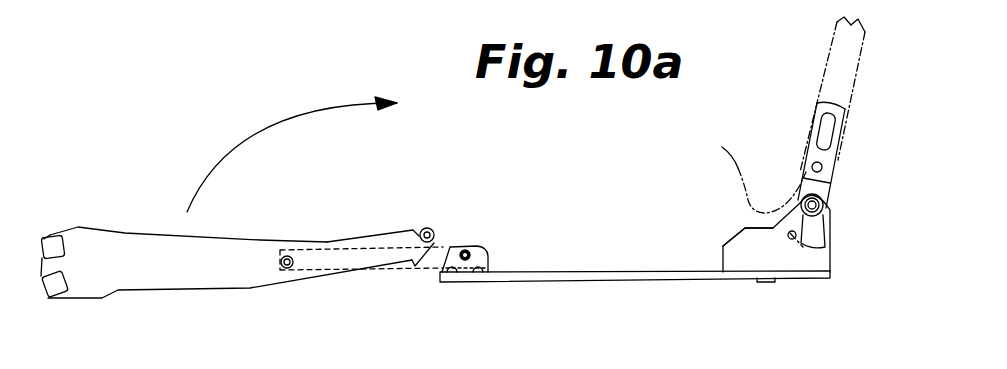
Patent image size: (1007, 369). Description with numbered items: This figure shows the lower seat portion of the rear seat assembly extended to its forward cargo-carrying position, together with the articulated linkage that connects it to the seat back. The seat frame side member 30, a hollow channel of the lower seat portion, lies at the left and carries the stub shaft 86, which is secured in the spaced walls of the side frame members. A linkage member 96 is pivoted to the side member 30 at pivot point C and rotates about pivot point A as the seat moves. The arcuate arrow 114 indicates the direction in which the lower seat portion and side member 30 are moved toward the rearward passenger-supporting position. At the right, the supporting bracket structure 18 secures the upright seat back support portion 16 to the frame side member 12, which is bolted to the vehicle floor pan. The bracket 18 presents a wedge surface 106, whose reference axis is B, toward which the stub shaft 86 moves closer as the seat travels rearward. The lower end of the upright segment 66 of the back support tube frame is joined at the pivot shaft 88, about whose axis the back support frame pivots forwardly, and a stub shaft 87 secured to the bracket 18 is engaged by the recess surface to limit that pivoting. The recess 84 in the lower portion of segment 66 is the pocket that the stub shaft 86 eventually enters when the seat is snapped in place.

The side member 12 is at (642, 279).
The seat back support portion 16 is at (828, 60).
The supporting bracket structure 18 is at (745, 257).
The seat frame member 30 is at (225, 273).
The upright segment 66 is at (848, 112).
The recess 84 is at (747, 188).
The stub shaft 86 is at (438, 240).
The stub shaft 87 is at (797, 243).
The pivot shaft 88 is at (823, 207).
The linkage member 96 is at (370, 250).
The wedge surface 106 is at (745, 233).
The arcuate arrow 114 is at (262, 132).
The pivot point A is at (465, 251).
The reference axis B is at (425, 228).
The pivot point C is at (283, 256).